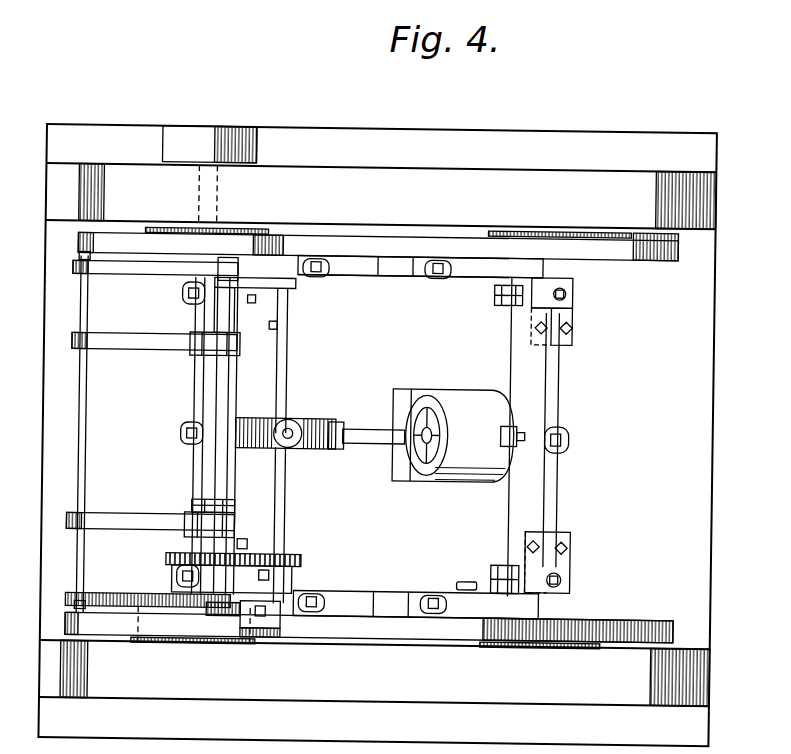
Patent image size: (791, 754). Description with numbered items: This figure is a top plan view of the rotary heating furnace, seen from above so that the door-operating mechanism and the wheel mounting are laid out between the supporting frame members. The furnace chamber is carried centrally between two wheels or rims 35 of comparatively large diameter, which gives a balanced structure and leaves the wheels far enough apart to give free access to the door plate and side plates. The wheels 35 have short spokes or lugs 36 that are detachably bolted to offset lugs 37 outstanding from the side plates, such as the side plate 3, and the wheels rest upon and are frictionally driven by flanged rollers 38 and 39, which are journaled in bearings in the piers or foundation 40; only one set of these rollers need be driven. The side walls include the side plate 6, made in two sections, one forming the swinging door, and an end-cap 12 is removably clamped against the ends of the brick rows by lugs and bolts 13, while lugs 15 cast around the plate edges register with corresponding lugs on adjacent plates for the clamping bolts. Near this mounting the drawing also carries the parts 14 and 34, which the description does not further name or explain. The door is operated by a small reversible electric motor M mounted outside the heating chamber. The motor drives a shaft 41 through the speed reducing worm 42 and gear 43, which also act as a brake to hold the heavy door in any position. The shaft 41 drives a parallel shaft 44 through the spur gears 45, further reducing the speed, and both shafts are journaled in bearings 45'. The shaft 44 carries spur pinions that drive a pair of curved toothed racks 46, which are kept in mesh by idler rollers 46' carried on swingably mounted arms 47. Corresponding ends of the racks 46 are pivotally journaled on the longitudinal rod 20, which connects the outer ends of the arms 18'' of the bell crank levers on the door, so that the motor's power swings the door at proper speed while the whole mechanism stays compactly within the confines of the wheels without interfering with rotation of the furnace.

The piers or foundation 40 is at (131, 180).
The flanged roller 38 is at (158, 232).
The flanged roller 39 is at (522, 228).
The wheels or rims 35 is at (648, 255).
The spokes or lugs 36 is at (280, 608).
The side plate 3 is at (397, 270).
The offset lugs 37 is at (270, 630).
The bearings 45' is at (222, 633).
The spur gears 45 is at (242, 556).
The arms 47 is at (205, 500).
The shaft 44 is at (222, 470).
The side plate 6 is at (197, 394).
The gear 43 is at (258, 420).
The shaft 41 is at (291, 498).
The worm 42 is at (325, 418).
The electric motor M is at (455, 390).
The end-cap 12 is at (538, 502).
The slide bracket 14 is at (545, 383).
The slide 34 is at (558, 402).
The lugs and bolts 13 is at (573, 433).
The lugs 15 is at (441, 255).
The longitudinal rod 20 is at (90, 470).
The arms 18'' is at (151, 431).
The curved toothed racks 46 is at (153, 430).
The idler rollers 46' is at (178, 535).